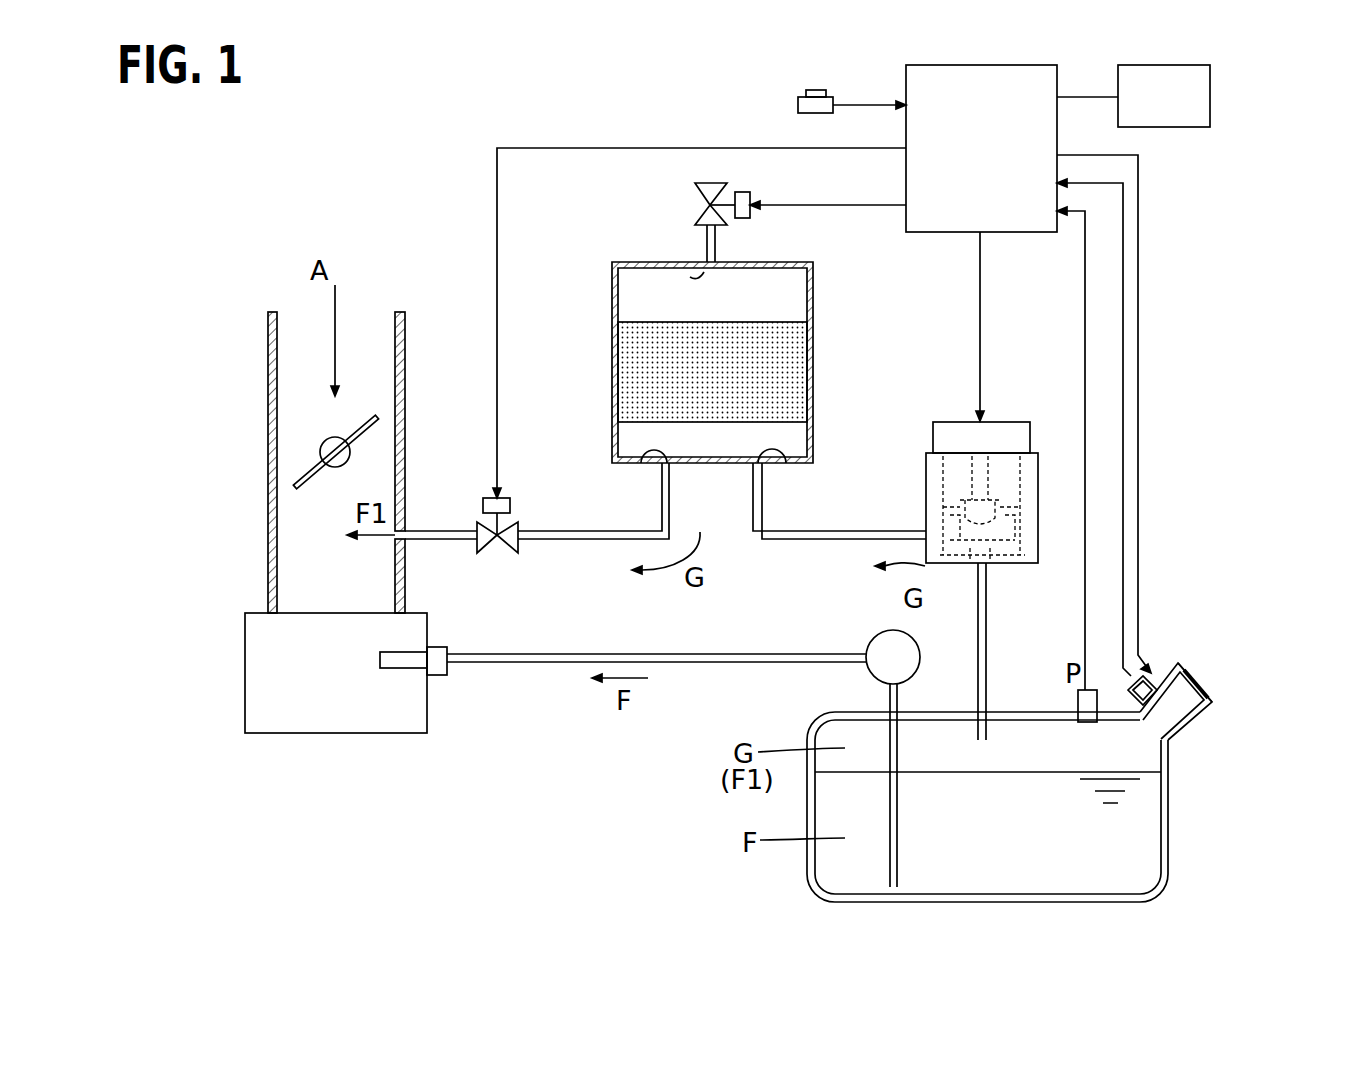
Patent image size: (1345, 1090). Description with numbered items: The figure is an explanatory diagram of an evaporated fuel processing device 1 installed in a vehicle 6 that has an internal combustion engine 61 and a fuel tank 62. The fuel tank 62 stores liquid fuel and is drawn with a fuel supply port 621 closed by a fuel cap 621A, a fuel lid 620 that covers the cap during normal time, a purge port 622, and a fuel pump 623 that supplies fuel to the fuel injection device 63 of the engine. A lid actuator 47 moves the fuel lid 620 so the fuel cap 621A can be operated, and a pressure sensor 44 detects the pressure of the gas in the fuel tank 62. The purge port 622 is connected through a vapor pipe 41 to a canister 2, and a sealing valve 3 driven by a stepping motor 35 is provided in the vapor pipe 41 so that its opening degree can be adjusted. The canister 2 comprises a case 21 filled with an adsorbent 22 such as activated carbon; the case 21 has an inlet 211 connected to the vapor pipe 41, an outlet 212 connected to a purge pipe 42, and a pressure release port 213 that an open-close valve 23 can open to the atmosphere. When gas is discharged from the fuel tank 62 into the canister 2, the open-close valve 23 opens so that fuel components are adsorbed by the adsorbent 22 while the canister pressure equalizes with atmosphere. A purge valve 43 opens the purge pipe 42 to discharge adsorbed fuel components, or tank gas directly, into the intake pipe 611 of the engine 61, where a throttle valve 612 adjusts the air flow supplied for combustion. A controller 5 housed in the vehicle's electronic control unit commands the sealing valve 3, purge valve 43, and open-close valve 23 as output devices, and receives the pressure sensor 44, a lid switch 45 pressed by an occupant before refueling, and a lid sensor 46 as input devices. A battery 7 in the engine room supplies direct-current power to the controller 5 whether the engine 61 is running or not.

The evaporated fuel processing device 1 is at (394, 206).
The canister 2 is at (728, 373).
The case 21 is at (814, 435).
The inlet 211 is at (786, 463).
The outlet 212 is at (641, 463).
The pressure release port 213 is at (690, 277).
The adsorbent 22 is at (780, 361).
The open-close valve 23 is at (728, 221).
The sealing valve 3 is at (1040, 501).
The stepping motor 35 is at (1005, 438).
The vapor pipe 41 is at (810, 542).
The purge pipe 42 is at (600, 542).
The purge valve 43 is at (507, 542).
The pressure sensor 44 is at (1078, 704).
The lid switch 45 is at (798, 105).
The lid sensor 46 is at (1140, 718).
The lid actuator 47 is at (1157, 706).
The controller 5 is at (1025, 216).
The vehicle 6 is at (597, 776).
The internal combustion engine 61 is at (300, 674).
The intake pipe 611 is at (330, 548).
The throttle valve 612 is at (335, 452).
The fuel tank 62 is at (1061, 768).
The fuel lid 620 is at (1183, 665).
The fuel supply port 621 is at (1220, 715).
The fuel cap 621A is at (1199, 686).
The purge port 622 is at (978, 738).
The fuel pump 623 is at (893, 655).
The fuel injection device 63 is at (437, 675).
The battery 7 is at (1175, 112).